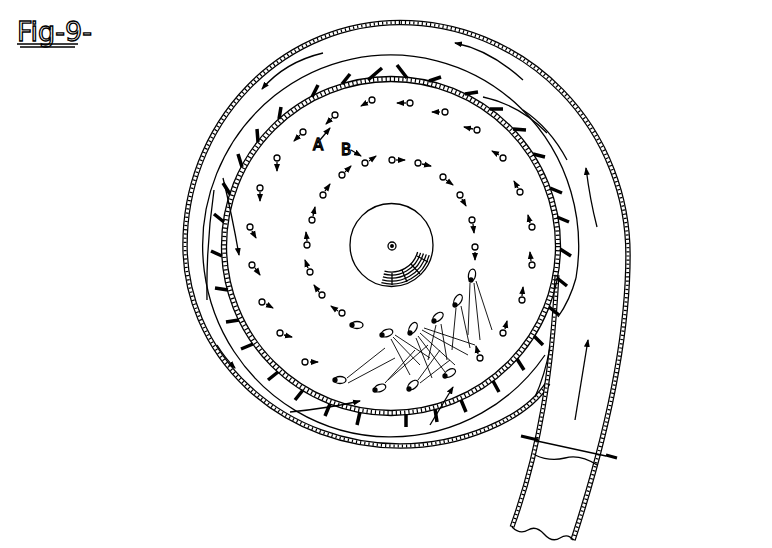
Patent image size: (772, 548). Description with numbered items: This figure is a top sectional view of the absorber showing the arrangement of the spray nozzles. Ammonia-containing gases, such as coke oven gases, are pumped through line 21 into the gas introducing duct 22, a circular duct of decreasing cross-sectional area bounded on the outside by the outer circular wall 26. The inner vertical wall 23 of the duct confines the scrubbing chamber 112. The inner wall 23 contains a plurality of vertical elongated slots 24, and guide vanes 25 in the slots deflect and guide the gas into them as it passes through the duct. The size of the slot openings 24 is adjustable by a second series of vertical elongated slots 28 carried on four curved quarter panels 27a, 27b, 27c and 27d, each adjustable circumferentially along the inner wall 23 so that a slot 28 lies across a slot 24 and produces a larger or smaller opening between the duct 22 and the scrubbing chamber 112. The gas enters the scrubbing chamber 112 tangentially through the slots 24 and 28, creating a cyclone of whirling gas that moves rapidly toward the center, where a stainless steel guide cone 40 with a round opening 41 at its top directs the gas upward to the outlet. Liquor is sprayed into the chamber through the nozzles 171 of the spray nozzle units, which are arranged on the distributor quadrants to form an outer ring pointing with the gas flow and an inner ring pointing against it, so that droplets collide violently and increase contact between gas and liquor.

The line 21 is at (588, 497).
The gas introducing duct 22 is at (612, 131).
The inner vertical wall 23 is at (400, 240).
The vertical elongated slots 24 is at (387, 69).
The guide vanes 25 is at (397, 75).
The outer circular wall 26 is at (345, 25).
The curved quarter panel 27a is at (437, 97).
The curved quarter panel 27b is at (345, 87).
The curved quarter panel 27c is at (364, 410).
The curved quarter panel 27d is at (407, 412).
The second series of vertical elongated slots 28 is at (371, 94).
The guide cone 40 is at (431, 230).
The round opening 41 is at (394, 242).
The scrubbing chamber 112 is at (288, 230).
The nozzle 171 is at (409, 108).